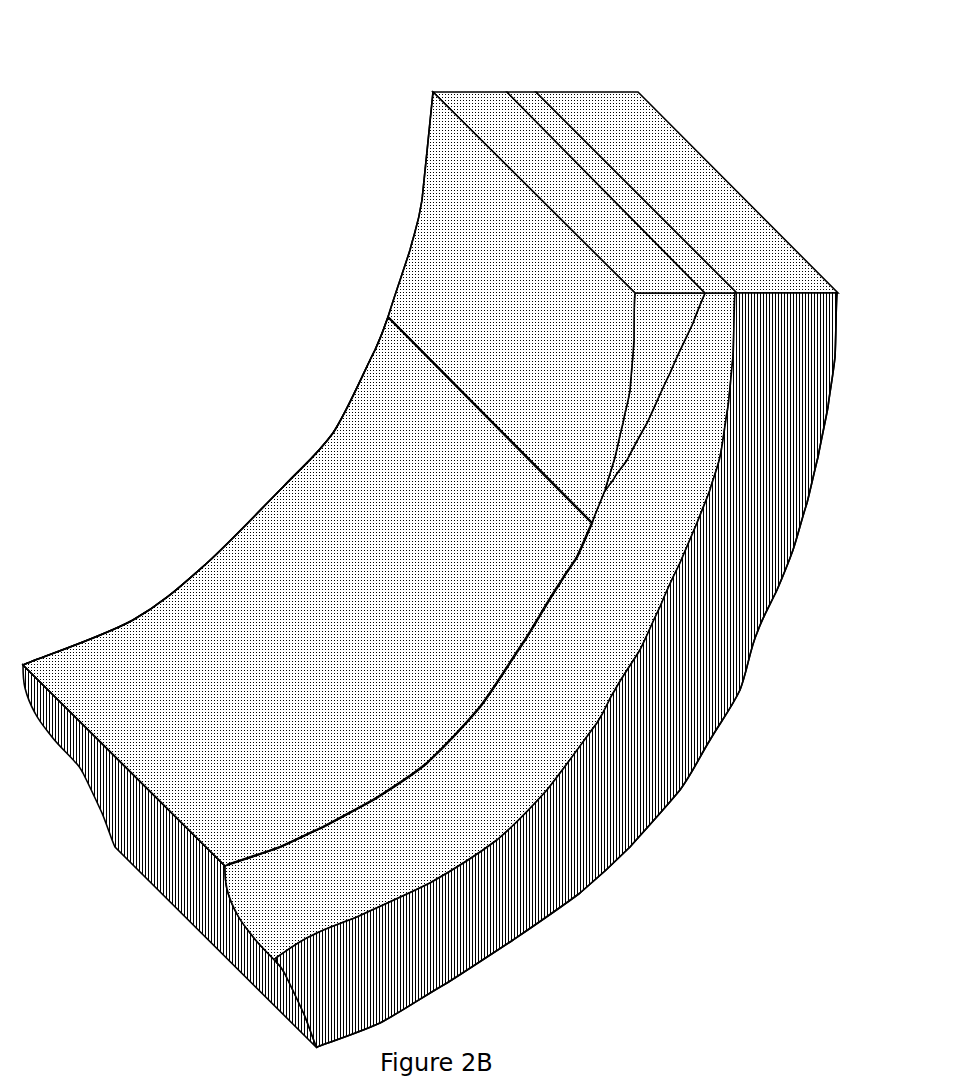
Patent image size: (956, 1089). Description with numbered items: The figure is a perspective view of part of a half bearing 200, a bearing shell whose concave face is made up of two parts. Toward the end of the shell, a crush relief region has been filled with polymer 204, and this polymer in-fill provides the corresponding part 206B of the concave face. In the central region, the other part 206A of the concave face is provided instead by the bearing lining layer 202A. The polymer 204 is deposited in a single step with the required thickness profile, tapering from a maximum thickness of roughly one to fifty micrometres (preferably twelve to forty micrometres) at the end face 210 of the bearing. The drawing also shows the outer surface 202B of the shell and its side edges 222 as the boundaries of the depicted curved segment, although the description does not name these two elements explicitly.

The half bearing 200 is at (447, 528).
The bearing lining layer 202A is at (333, 543).
The second (outer) surface 202B is at (635, 770).
The polymer 204 is at (329, 479).
The other part of the concave face 206A is at (346, 440).
The corresponding part of the concave face 206B is at (433, 274).
The end face 210 is at (597, 118).
The edge 222 is at (205, 563).